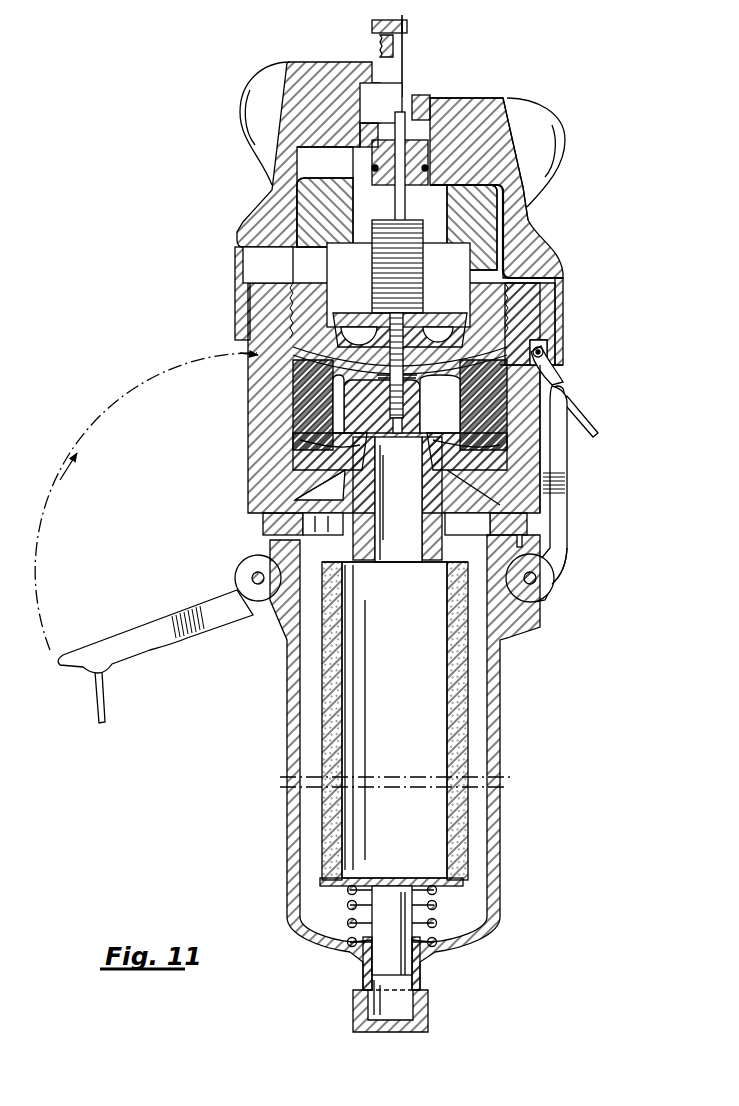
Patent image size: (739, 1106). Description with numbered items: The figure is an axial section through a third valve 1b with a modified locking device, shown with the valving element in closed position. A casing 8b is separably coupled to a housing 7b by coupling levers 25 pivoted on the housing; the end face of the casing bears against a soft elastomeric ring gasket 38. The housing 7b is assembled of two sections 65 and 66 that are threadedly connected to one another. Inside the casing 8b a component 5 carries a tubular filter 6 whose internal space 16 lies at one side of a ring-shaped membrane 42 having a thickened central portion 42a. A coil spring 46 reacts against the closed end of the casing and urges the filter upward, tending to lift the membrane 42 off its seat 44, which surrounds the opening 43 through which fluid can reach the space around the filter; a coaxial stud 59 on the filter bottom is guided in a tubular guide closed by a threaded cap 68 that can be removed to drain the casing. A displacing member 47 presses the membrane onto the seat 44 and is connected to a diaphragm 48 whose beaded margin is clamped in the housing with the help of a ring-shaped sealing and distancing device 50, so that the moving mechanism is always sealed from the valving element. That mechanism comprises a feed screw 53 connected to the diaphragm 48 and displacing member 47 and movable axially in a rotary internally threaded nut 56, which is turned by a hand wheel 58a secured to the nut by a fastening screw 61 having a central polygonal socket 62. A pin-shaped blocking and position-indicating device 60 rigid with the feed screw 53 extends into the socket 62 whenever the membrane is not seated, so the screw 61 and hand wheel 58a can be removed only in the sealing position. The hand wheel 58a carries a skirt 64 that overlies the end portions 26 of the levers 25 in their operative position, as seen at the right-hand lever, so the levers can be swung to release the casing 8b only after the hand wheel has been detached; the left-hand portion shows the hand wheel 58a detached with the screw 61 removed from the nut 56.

The valve 1b is at (200, 158).
The component 5 is at (322, 712).
The filter 6 is at (330, 808).
The housing 7b is at (598, 235).
The casing 8b is at (502, 750).
The internal space 16 is at (410, 716).
The levers 25 is at (570, 503).
The end portions 26 is at (545, 352).
The gasket 38 is at (263, 519).
The membrane 42 is at (460, 447).
The thickened central portion 42a is at (428, 522).
The opening 43 is at (355, 515).
The seat 44 is at (335, 468).
The coil spring 46 is at (350, 923).
The displacing member 47 is at (355, 390).
The diaphragm 48 is at (517, 370).
The sealing and distancing device 50 is at (310, 413).
The feed screw 53 is at (372, 288).
The nut 56 is at (402, 150).
The hand wheel 58a is at (263, 96).
The stud 59 is at (398, 914).
The blocking and position-indicating device 60 is at (453, 123).
The fastening screw 61 is at (372, 26).
The socket 62 is at (396, 46).
The skirt 64 is at (236, 284).
The housing section 65 is at (500, 223).
The housing section 66 is at (530, 318).
The threaded cap 68 is at (437, 1013).